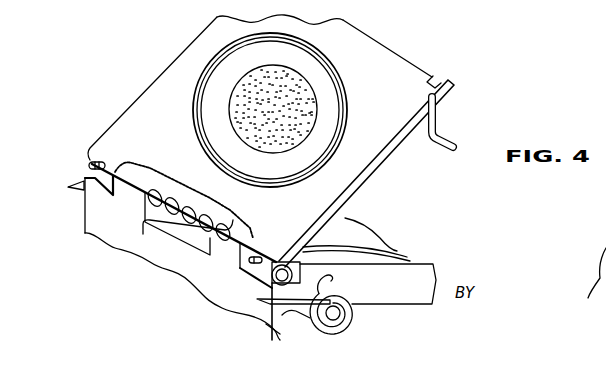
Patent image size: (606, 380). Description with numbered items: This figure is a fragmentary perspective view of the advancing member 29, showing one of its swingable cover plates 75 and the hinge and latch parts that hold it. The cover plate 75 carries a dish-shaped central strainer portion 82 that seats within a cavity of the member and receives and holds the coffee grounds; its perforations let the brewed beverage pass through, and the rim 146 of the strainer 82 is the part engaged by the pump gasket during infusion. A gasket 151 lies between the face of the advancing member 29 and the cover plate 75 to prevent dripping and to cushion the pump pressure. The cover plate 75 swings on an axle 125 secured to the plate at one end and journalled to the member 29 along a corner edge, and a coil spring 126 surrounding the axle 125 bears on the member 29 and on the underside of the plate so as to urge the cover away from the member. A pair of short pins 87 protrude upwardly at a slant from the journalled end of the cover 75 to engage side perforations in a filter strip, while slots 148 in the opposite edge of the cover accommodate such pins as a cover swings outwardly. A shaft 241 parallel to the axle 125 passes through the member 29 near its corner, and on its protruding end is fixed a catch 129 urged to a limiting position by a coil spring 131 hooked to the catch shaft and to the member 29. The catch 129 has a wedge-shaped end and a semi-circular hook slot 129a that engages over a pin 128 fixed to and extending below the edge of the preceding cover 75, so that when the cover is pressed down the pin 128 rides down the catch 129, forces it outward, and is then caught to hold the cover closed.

The cover plate 75 is at (301, 215).
The strainer portion 82 is at (292, 90).
The rim 146 is at (344, 144).
The slots 148 is at (432, 74).
The pin 128 is at (429, 140).
The pins 87 is at (92, 164).
The catch 129 is at (80, 188).
The hook slot 129a is at (266, 324).
The axle 125 is at (198, 237).
The coil spring 126 is at (177, 227).
The advancing member 29 is at (417, 284).
The gasket 151 is at (395, 251).
The shaft 241 is at (357, 322).
The coil spring 131 is at (340, 292).